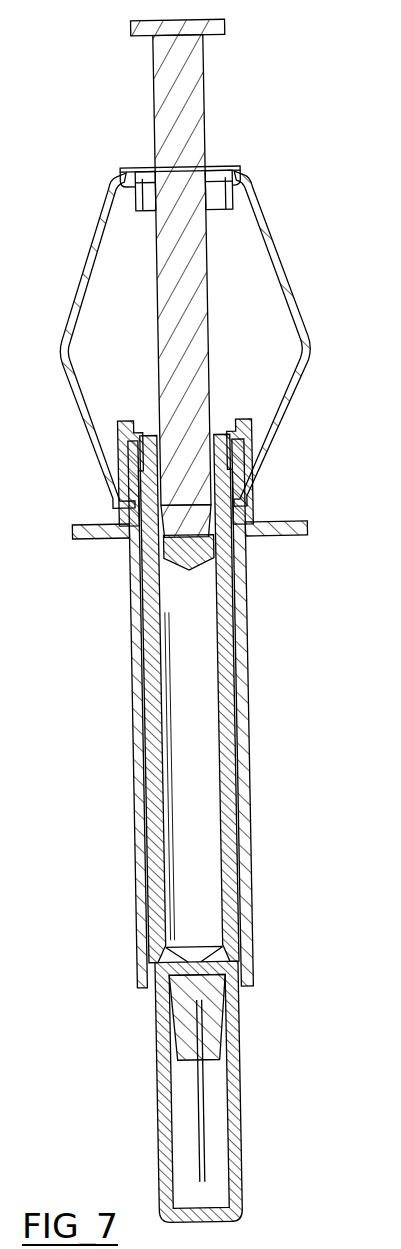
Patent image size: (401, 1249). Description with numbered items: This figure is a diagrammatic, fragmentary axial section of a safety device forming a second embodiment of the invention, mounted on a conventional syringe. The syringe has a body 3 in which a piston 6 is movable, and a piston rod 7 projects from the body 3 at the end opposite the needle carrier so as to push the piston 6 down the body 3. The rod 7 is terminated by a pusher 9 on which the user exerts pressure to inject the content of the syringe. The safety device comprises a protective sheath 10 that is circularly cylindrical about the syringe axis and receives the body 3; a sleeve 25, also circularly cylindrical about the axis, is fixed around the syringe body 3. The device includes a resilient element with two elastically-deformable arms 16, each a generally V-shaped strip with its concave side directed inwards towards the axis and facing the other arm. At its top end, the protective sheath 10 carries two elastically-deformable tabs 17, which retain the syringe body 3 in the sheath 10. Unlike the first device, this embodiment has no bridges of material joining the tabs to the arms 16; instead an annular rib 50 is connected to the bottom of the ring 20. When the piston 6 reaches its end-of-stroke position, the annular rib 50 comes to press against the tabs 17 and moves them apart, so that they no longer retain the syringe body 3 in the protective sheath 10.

The pusher 9 is at (212, 27).
The piston rod 7 is at (188, 89).
The ring 20 is at (232, 166).
The annular rib 50 is at (220, 200).
The elastically-deformable arms 16 is at (298, 383).
The elastically-deformable tabs 17 is at (128, 423).
The piston 6 is at (197, 566).
The sleeve 25 is at (237, 674).
The body 3 is at (153, 726).
The protective sheath 10 is at (247, 858).